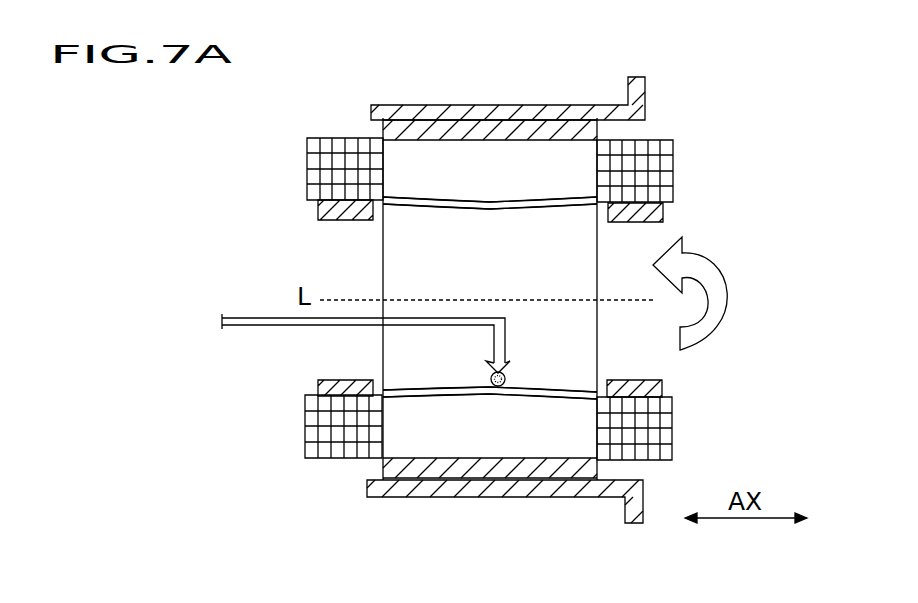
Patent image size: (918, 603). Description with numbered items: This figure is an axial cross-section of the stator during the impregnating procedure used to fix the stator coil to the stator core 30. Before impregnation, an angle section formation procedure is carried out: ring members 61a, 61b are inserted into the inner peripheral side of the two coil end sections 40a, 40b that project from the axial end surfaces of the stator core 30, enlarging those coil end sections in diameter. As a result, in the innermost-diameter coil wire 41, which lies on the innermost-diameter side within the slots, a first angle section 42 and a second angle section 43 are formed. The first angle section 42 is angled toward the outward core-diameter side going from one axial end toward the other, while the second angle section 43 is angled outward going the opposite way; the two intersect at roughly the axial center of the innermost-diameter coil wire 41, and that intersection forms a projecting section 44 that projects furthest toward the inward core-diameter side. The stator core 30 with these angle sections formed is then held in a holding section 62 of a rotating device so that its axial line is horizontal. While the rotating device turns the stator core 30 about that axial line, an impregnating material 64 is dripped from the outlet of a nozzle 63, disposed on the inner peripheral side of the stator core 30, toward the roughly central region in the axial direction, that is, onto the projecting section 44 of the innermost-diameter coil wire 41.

The stator core 30 is at (382, 250).
The innermost-diameter coil wire 41 is at (472, 195).
The first angle section 42 is at (550, 204).
The second angle section 43 is at (420, 204).
The projecting section 44 is at (490, 207).
The holding section 62 is at (565, 105).
The coil end section 40a is at (673, 160).
The coil end section 40b is at (318, 165).
The ring member 61a is at (663, 213).
The ring member 61b is at (320, 210).
The nozzle 63 is at (268, 316).
The impregnating material 64 is at (507, 375).